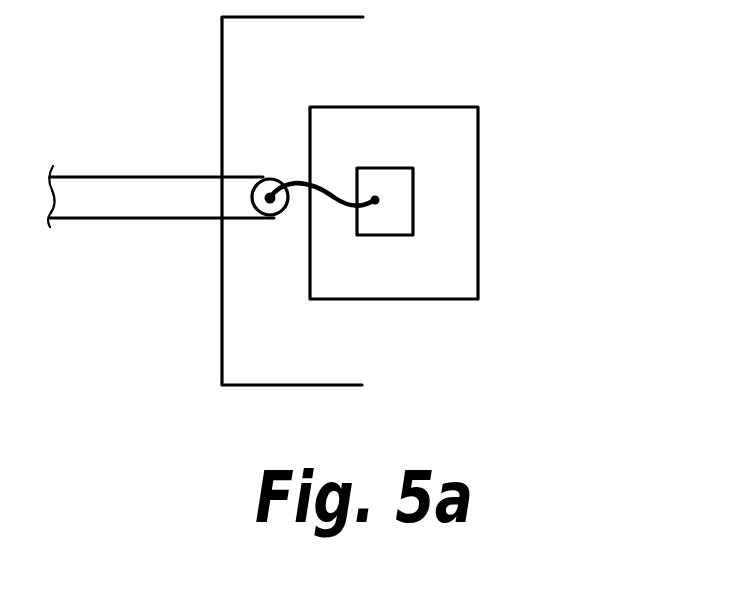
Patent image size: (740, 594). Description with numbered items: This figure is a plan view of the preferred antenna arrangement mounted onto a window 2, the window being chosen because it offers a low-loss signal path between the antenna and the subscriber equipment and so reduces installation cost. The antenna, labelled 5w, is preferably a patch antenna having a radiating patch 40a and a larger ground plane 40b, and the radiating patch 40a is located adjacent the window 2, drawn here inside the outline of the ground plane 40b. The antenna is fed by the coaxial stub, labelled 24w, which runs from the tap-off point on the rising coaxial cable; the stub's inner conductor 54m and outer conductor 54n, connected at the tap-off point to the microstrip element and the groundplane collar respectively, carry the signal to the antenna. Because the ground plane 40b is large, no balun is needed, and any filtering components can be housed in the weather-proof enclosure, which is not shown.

The window 2 is at (259, 53).
The wire of link member 24w is at (142, 224).
The inner conductor of the coaxial stub 54m is at (263, 179).
The outer conductor of the coaxial stub 54n is at (275, 216).
The radiating patch 40a is at (403, 187).
The ground plane 40b is at (465, 268).
The wire of drive 5w is at (435, 304).